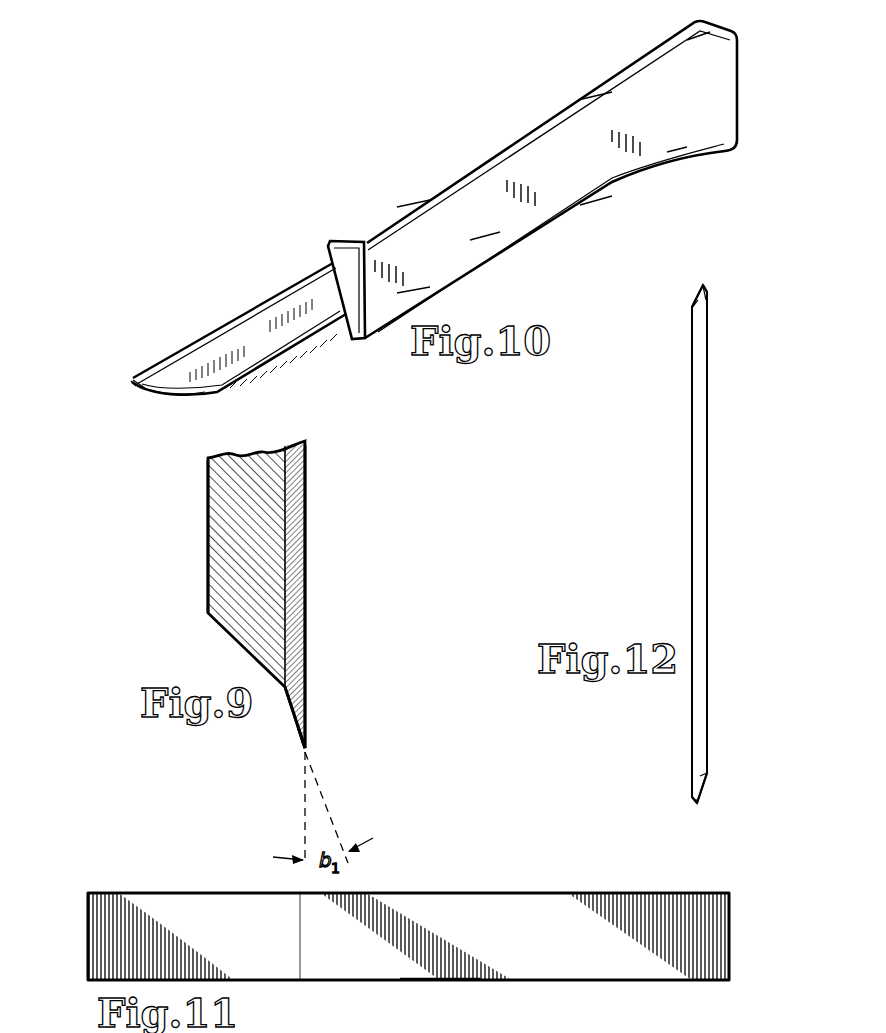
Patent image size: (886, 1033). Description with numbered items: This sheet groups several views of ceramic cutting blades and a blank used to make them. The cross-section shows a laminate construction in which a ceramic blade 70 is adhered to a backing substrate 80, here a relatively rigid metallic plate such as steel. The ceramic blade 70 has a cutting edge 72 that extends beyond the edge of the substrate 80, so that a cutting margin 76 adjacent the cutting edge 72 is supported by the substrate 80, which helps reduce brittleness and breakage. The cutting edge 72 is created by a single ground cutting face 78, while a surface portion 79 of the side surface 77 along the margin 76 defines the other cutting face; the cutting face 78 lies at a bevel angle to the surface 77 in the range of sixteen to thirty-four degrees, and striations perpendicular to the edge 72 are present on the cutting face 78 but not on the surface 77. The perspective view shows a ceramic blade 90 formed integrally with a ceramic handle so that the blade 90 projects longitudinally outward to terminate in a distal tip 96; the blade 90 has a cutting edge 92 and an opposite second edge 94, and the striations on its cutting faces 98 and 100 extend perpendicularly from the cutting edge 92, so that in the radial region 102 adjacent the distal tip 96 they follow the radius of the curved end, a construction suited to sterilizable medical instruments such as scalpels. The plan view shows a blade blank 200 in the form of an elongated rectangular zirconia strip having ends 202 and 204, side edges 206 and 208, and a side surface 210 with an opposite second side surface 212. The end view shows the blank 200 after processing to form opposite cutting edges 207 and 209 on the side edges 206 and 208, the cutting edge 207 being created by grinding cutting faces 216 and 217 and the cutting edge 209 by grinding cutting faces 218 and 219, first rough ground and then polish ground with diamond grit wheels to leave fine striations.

In FIG. 9, the ceramic blade 70 is at (304, 490).
In FIG. 9, the cutting edge 72 is at (307, 749).
In FIG. 9, the cutting margin 76 is at (306, 695).
In FIG. 9, the side surface 77 is at (306, 553).
In FIG. 9, the ground cutting face 78 is at (297, 726).
In FIG. 9, the surface portion 79 is at (306, 729).
In FIG. 9, the backing substrate 80 is at (209, 538).
In FIG. 10, the ceramic blade 90 is at (268, 323).
In FIG. 10, the cutting edge 92 is at (497, 217).
In FIG. 10, the second edge 94 is at (230, 323).
In FIG. 10, the distal tip 96 is at (133, 386).
In FIG. 10, the cutting face 98 is at (282, 350).
In FIG. 10, the cutting face 100 is at (138, 377).
In FIG. 10, the radial region 102 is at (178, 378).
In FIG. 12, the blade blank 200 is at (640, 491).
In FIG. 11, the blade blank 200 is at (522, 872).
In FIG. 11, the end 202 is at (88, 933).
In FIG. 11, the end 204 is at (729, 925).
In FIG. 12, the side edge 206 is at (703, 307).
In FIG. 11, the side edge 206 is at (240, 892).
In FIG. 12, the cutting edge 207 is at (703, 285).
In FIG. 11, the cutting edge 207 is at (436, 1032).
In FIG. 12, the side edge 208 is at (703, 772).
In FIG. 11, the side edge 208 is at (325, 982).
In FIG. 12, the cutting edge 209 is at (698, 808).
In FIG. 12, the side surface 210 is at (708, 555).
In FIG. 11, the side surface 210 is at (424, 902).
In FIG. 12, the second side surface 212 is at (691, 560).
In FIG. 12, the cutting face 216 is at (697, 295).
In FIG. 12, the cutting face 217 is at (707, 291).
In FIG. 12, the cutting face 218 is at (703, 787).
In FIG. 12, the cutting face 219 is at (692, 797).